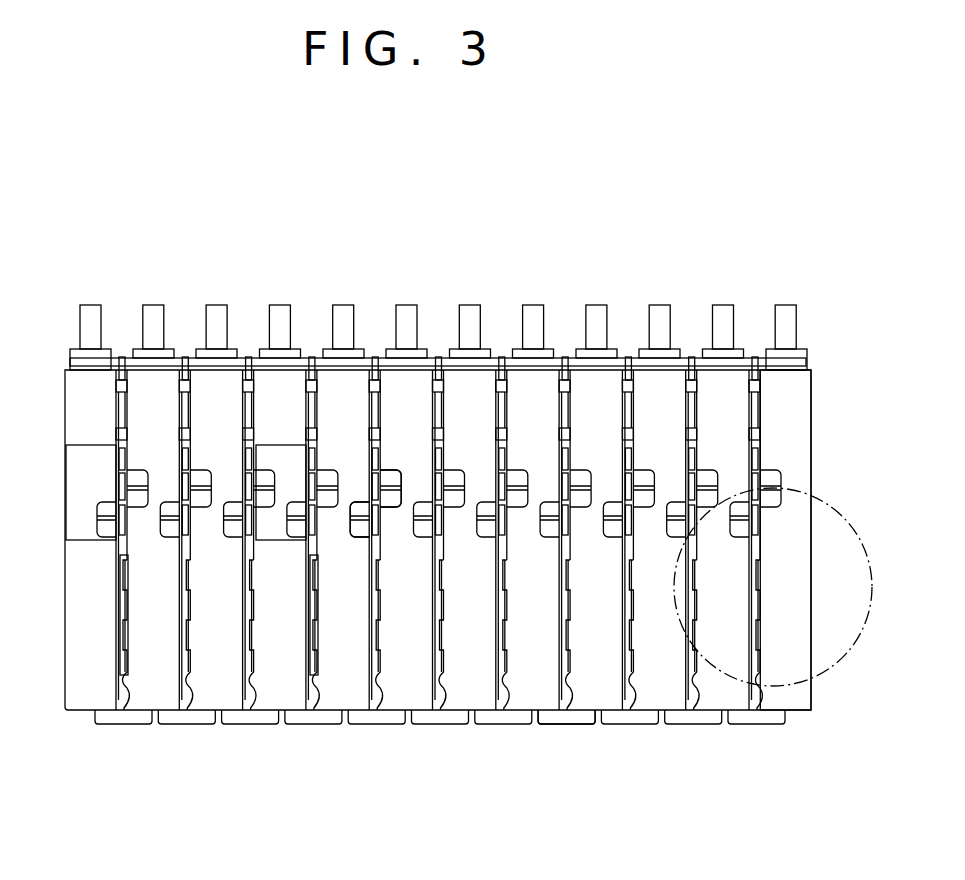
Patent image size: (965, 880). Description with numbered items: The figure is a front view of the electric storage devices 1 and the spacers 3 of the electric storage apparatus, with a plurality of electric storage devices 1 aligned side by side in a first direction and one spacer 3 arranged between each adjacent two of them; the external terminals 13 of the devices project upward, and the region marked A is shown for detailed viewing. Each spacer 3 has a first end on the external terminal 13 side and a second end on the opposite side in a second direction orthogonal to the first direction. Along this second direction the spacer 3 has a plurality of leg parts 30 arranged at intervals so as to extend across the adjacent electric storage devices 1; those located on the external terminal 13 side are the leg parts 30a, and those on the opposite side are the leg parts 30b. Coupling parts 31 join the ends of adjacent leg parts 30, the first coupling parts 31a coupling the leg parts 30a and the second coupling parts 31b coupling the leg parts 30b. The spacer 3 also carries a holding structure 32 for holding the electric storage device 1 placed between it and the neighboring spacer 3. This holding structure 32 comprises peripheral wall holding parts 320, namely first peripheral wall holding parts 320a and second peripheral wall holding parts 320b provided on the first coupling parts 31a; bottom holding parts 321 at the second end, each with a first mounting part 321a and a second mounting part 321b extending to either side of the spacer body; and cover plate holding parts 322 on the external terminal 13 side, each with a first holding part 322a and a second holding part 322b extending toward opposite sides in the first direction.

The electric storage device 1 is at (822, 466).
The spacer 3 is at (776, 408).
The external terminal 13 is at (155, 308).
The leg part 30 is at (102, 639).
The leg part on first end side 30a is at (116, 450).
The leg part on second end side 30b is at (127, 560).
The coupling part 31 is at (309, 639).
The first coupling part 31a is at (306, 450).
The second coupling part 31b is at (317, 560).
The holding structure 32 is at (440, 540).
The peripheral wall holding part 320 is at (372, 361).
The first peripheral wall holding part 320a is at (360, 506).
The second peripheral wall holding part 320b is at (388, 478).
The bottom holding part 321 is at (569, 786).
The first mounting part 321a is at (548, 722).
The second mounting part 321b is at (578, 722).
The cover plate holding part 322 is at (571, 274).
The first holding part 322a is at (545, 360).
The second holding part 322b is at (586, 362).
The detail region A is at (865, 547).